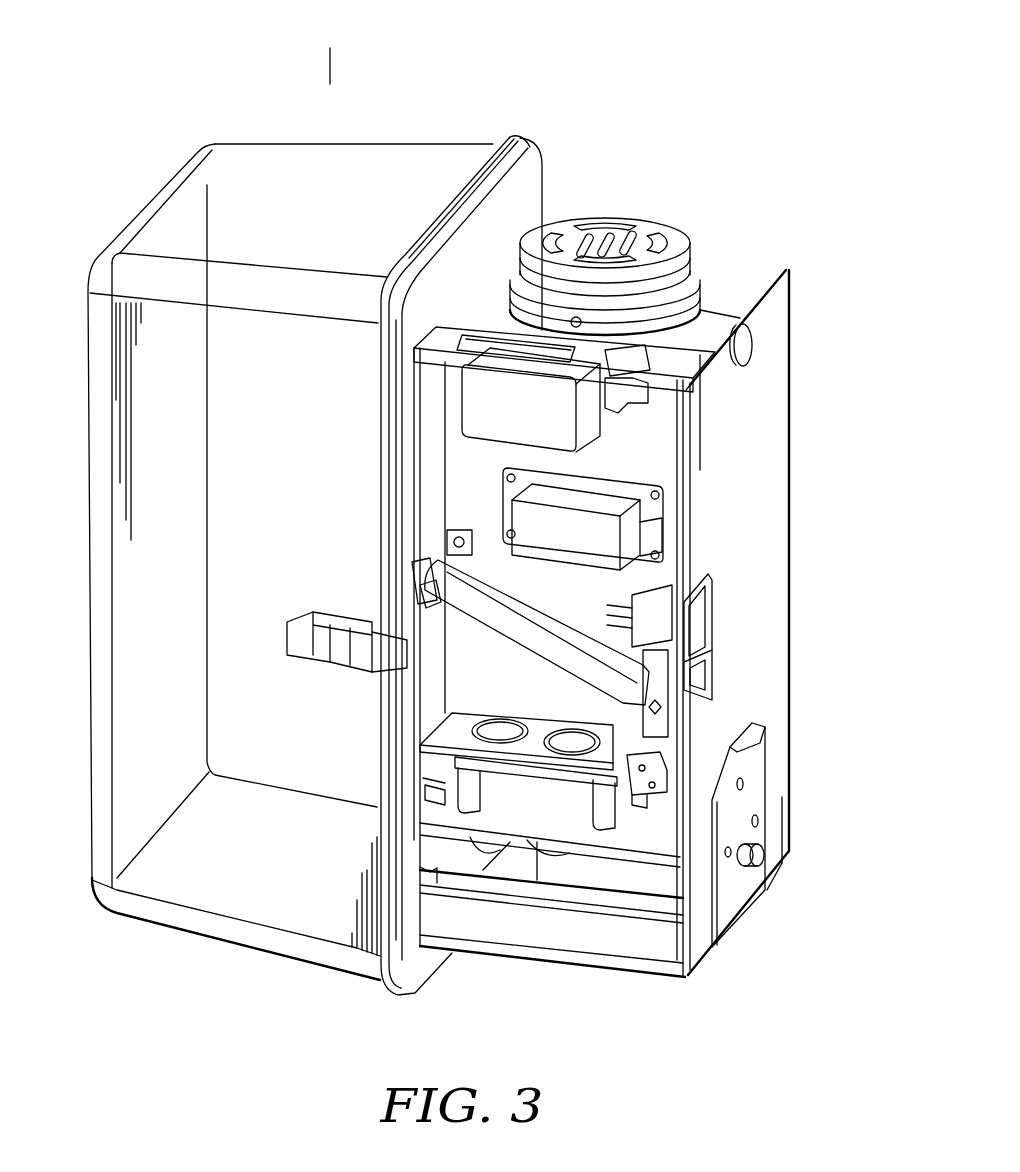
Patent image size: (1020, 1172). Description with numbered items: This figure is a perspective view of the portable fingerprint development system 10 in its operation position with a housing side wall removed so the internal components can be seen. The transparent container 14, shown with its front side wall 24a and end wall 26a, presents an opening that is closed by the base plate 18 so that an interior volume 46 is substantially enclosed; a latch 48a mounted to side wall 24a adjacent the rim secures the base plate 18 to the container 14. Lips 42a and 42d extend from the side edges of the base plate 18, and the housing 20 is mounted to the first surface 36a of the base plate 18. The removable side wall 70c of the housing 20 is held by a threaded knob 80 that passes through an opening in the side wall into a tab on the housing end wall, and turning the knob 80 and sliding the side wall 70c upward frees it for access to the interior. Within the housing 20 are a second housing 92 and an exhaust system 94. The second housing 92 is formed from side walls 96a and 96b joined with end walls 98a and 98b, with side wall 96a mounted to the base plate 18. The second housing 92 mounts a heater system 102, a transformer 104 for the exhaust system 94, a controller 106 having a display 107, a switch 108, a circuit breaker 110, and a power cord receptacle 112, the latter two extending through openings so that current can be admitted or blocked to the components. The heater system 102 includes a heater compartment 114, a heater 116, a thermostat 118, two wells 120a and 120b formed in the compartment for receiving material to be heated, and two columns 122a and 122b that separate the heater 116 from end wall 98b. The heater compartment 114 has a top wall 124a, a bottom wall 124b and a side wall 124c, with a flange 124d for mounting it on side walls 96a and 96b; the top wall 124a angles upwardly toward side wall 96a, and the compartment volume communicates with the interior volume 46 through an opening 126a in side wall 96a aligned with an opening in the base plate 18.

The portable fingerprint development system 10 is at (330, 92).
The container 14 is at (446, 144).
The base plate 18 is at (533, 173).
The housing 20 is at (792, 415).
The front side wall 24a is at (207, 913).
The end wall 26a is at (240, 157).
The first surface 36a is at (487, 255).
The lip 42a is at (453, 210).
The lip 42d is at (395, 440).
The interior volume 46 is at (134, 589).
The latch 48a is at (305, 656).
The side wall 70c is at (725, 514).
The threaded knob 80 is at (750, 343).
The second housing 92 is at (702, 358).
The exhaust system 94 is at (651, 224).
The side wall 96a is at (432, 470).
The side wall 96b is at (654, 459).
The end wall 98a is at (450, 330).
The end wall 98b is at (609, 840).
The heater system 102 is at (445, 742).
The transformer 104 is at (553, 542).
The controller 106 is at (507, 417).
The display 107 is at (493, 335).
The switch 108 is at (632, 369).
The circuit breaker 110 is at (708, 612).
The power cord receptacle 112 is at (705, 662).
The heater compartment 114 is at (425, 572).
The heater 116 is at (530, 772).
The thermostat 118 is at (652, 798).
The well 120a is at (498, 718).
The well 120b is at (572, 729).
The column 122a is at (480, 806).
The column 122b is at (613, 820).
The top wall 124a is at (510, 642).
The bottom wall 124b is at (425, 778).
The side wall 124c is at (668, 737).
The flange 124d is at (475, 532).
The opening 126a is at (440, 600).